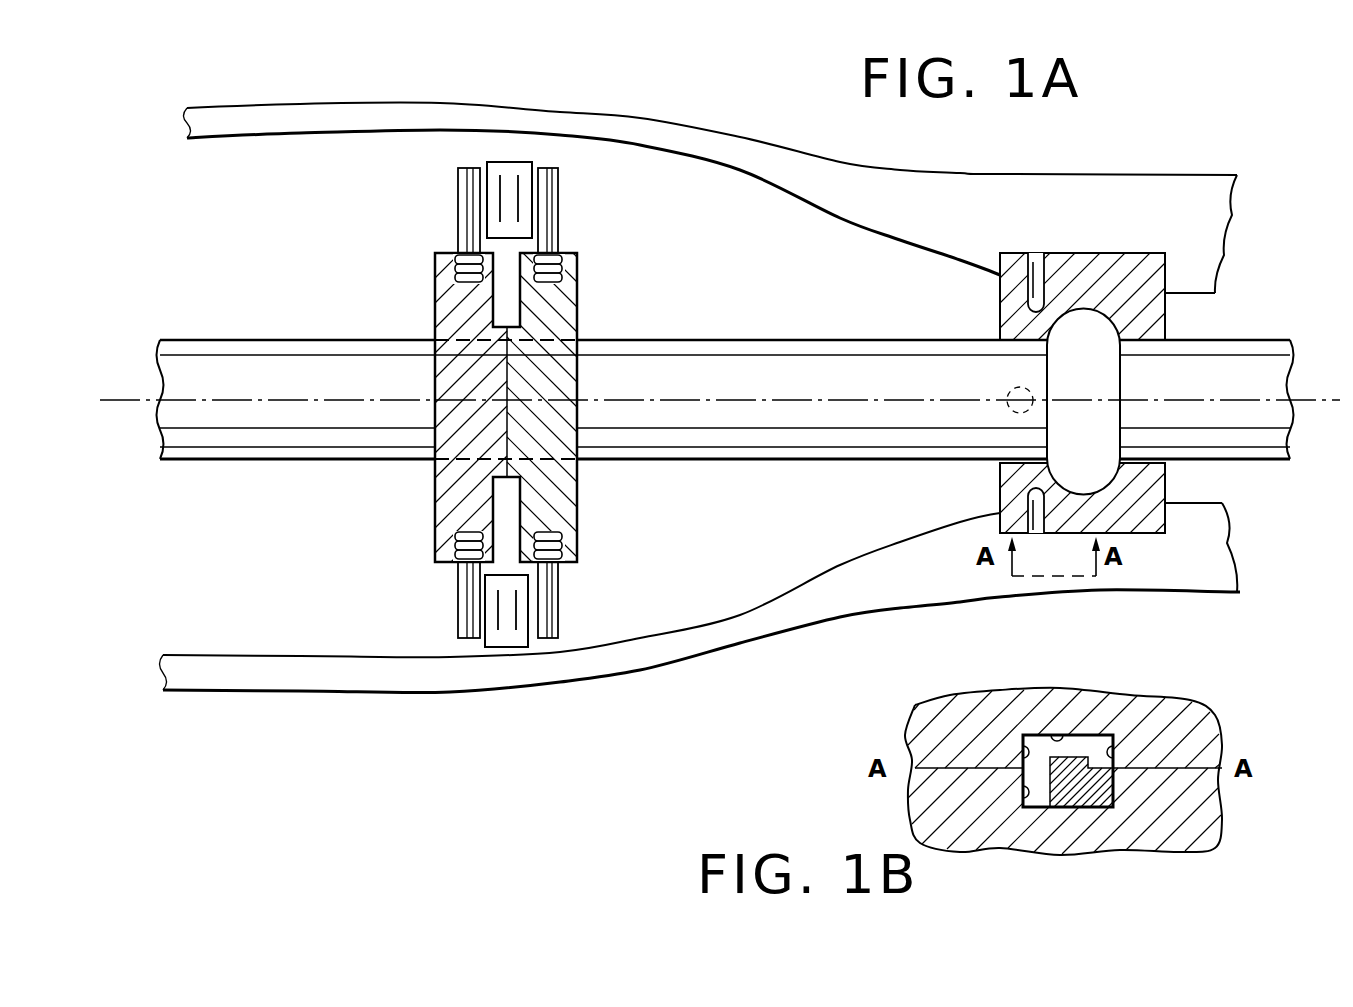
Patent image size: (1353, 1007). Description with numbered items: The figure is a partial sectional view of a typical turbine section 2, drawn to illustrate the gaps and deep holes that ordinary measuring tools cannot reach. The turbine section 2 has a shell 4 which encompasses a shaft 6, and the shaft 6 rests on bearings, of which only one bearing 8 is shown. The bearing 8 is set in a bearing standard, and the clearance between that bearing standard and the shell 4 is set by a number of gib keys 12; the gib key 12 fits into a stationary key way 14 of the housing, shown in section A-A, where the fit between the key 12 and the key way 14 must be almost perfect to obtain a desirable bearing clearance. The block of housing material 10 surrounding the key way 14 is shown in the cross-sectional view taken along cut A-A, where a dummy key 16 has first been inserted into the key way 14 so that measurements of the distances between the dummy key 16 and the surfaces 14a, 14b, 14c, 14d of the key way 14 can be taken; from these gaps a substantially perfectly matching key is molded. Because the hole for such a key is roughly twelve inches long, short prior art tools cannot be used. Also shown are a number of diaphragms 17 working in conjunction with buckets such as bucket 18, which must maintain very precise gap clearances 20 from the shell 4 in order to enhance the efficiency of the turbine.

In FIG. 1A, the turbine section 2 is at (368, 703).
In FIG. 1A, the shell 4 is at (990, 173).
In FIG. 1B, the shell 4 is at (1193, 820).
In FIG. 1A, the shaft 6 is at (299, 340).
In FIG. 1A, the bearing 8 is at (1120, 380).
In FIG. 1A, the block 10 is at (1170, 305).
In FIG. 1B, the block 10 is at (1133, 712).
In FIG. 1A, the gib key 12 is at (1037, 254).
In FIG. 1A, the key way 14 is at (1030, 290).
In FIG. 1B, the surface 14a is at (1020, 752).
In FIG. 1B, the surface 14b is at (1023, 792).
In FIG. 1B, the notch 14c is at (1058, 742).
In FIG. 1B, the notch 14d is at (1115, 752).
In FIG. 1B, the dummy key 16 is at (1080, 790).
In FIG. 1A, the diaphragm 17 is at (485, 195).
In FIG. 1A, the bucket 18 is at (558, 222).
In FIG. 1A, the gap clearance 20 is at (537, 165).